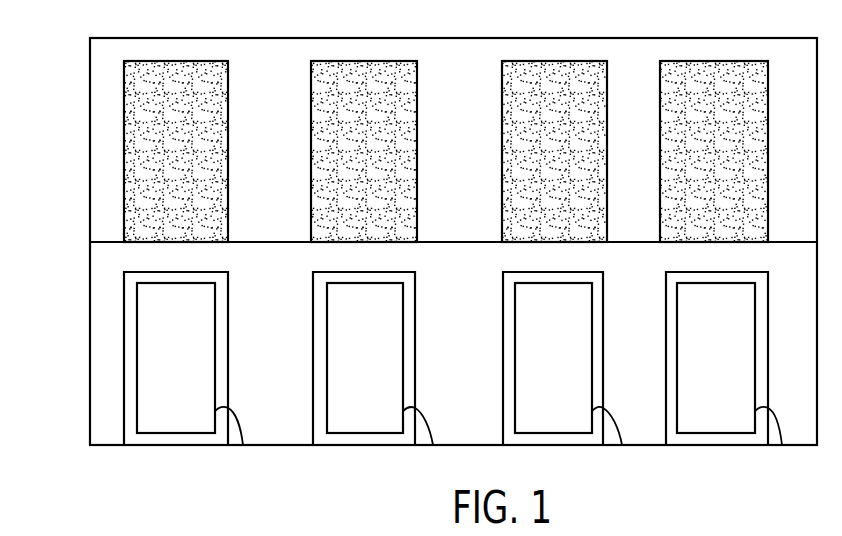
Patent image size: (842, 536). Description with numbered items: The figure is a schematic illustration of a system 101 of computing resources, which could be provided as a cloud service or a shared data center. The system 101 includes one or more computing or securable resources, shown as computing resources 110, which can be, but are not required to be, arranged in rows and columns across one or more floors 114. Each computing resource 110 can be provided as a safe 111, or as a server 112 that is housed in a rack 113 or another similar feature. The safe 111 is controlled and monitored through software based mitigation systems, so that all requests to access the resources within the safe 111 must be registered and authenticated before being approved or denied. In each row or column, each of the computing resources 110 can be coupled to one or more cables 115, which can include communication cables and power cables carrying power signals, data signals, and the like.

The system 101 is at (90, 82).
The computing resource 110 is at (228, 163).
The safe 111 is at (417, 103).
The server 112 is at (327, 336).
The rack 113 is at (503, 292).
The floor 114 is at (100, 259).
The cable 115 is at (611, 408).